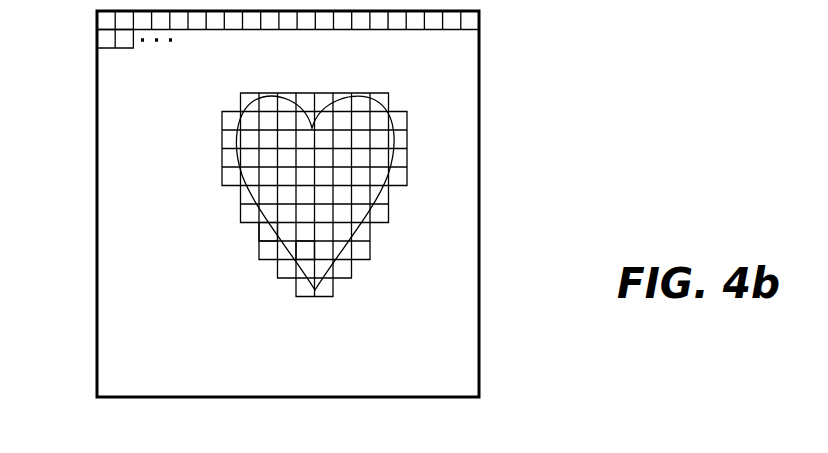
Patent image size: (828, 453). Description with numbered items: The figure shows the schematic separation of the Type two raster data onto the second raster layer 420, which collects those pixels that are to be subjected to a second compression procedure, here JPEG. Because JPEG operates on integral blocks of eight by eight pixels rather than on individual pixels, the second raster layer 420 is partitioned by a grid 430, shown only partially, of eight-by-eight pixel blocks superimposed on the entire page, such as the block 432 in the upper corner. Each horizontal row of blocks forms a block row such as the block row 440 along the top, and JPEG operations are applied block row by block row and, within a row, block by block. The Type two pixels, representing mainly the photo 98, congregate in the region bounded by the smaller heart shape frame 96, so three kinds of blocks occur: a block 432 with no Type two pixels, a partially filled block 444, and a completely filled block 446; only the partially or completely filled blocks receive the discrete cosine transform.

The second raster layer 420 is at (480, 57).
The block row 440 is at (480, 17).
The block 432 is at (132, 40).
The grid 430 is at (73, 16).
The heart shape frame 96 is at (397, 162).
The photo 98 is at (344, 197).
The block 444 is at (265, 233).
The block 446 is at (303, 253).